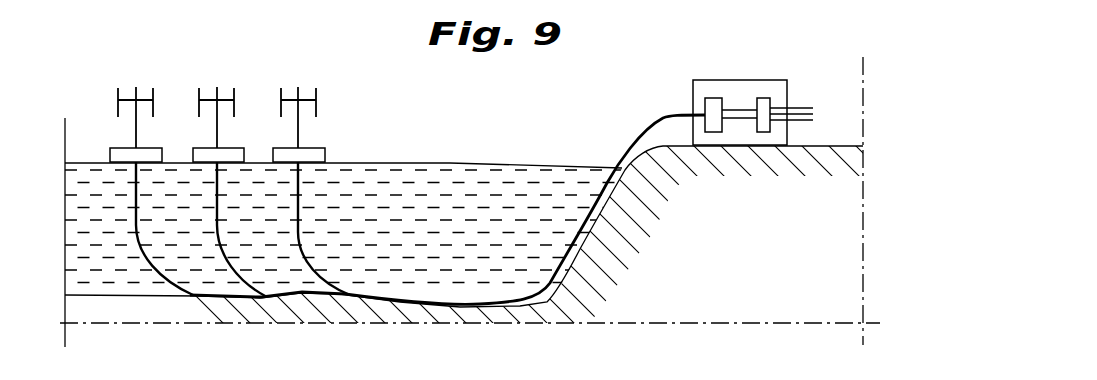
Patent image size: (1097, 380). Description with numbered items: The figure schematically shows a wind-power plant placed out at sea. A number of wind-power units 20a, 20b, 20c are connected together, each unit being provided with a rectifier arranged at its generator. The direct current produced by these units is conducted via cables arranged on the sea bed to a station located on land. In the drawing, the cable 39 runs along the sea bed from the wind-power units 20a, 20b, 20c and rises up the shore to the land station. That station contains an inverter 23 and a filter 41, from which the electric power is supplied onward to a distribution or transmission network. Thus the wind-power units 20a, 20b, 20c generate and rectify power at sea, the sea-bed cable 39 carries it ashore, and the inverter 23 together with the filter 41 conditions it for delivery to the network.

The wind-power unit 20a is at (125, 85).
The wind-power unit 20b is at (210, 85).
The wind-power unit 20c is at (292, 85).
The seabed cable 39 is at (533, 287).
The inverter 23 is at (710, 107).
The filter 41 is at (763, 107).